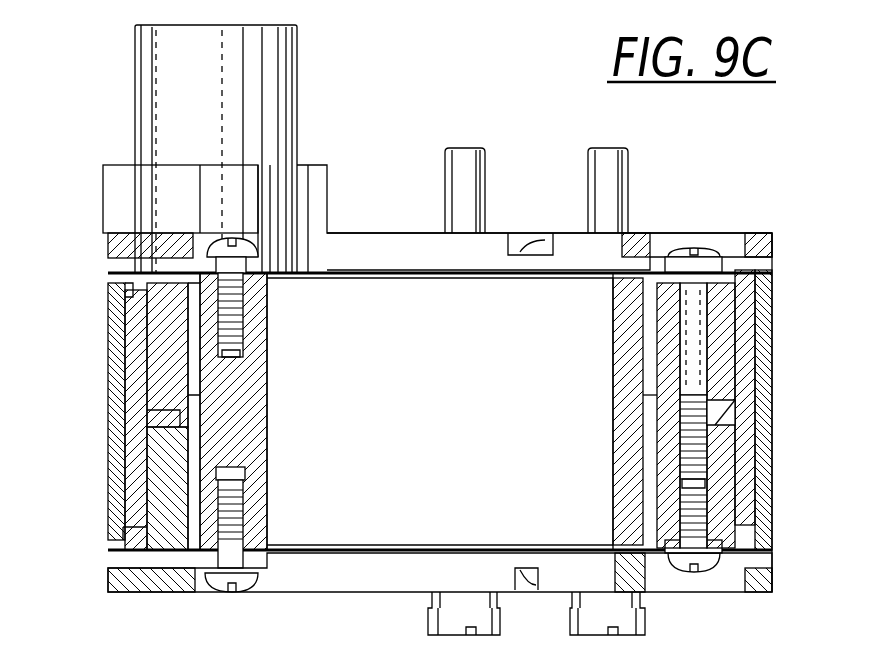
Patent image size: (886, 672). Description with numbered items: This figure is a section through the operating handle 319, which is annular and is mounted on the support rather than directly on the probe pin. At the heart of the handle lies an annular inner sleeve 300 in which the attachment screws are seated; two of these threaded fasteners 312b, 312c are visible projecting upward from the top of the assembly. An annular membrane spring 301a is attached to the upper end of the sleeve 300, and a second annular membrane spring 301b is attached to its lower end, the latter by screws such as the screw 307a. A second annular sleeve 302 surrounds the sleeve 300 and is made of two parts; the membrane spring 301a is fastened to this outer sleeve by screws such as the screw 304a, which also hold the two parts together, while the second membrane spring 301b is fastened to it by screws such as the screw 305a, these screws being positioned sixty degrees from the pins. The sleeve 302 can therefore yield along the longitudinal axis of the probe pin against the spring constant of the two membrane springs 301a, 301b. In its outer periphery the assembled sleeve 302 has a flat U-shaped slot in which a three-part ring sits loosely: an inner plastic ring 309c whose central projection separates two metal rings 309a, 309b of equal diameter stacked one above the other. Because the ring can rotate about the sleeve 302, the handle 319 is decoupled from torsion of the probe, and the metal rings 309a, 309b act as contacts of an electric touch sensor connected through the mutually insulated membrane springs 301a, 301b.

The annular inner sleeve 300 is at (618, 322).
The annular membrane spring 301a is at (437, 282).
The second annular membrane spring 301b is at (398, 546).
The second annular sleeve 302 is at (170, 462).
The screw 304a is at (718, 255).
The screw 305a is at (228, 238).
The screw 307a is at (243, 597).
The metal ring 309a is at (765, 378).
The metal ring 309b is at (765, 504).
The inner plastic ring 309c is at (765, 418).
The threaded fastener 312b is at (468, 205).
The threaded fastener 312c is at (615, 204).
The operating handle 319 is at (398, 145).